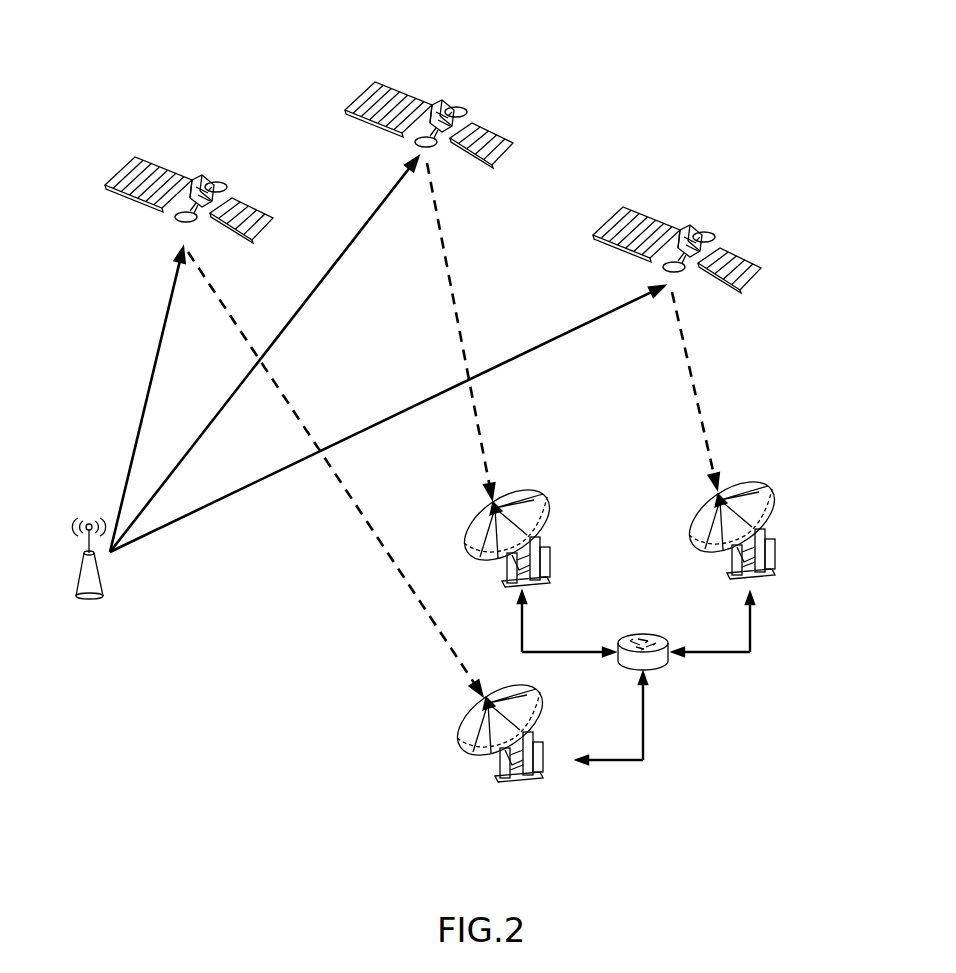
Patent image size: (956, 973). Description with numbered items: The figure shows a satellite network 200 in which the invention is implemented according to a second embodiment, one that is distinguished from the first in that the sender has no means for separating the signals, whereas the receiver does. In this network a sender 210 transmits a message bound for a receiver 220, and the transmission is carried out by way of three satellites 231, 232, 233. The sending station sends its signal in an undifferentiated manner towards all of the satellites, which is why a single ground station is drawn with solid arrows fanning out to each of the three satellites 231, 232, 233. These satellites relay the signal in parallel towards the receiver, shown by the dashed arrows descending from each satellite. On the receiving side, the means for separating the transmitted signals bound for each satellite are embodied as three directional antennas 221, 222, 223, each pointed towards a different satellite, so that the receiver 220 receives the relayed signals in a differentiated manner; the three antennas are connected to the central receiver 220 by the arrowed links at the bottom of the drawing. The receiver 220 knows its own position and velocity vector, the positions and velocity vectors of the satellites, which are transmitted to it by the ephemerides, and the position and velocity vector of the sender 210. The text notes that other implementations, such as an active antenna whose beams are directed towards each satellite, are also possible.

The satellite network 200 is at (637, 88).
The sender 210 is at (103, 600).
The receiver 220 is at (665, 677).
The directional antenna 221 is at (530, 782).
The directional antenna 222 is at (540, 492).
The directional antenna 223 is at (767, 483).
The satellite 231 is at (210, 178).
The satellite 232 is at (458, 105).
The satellite 233 is at (705, 227).